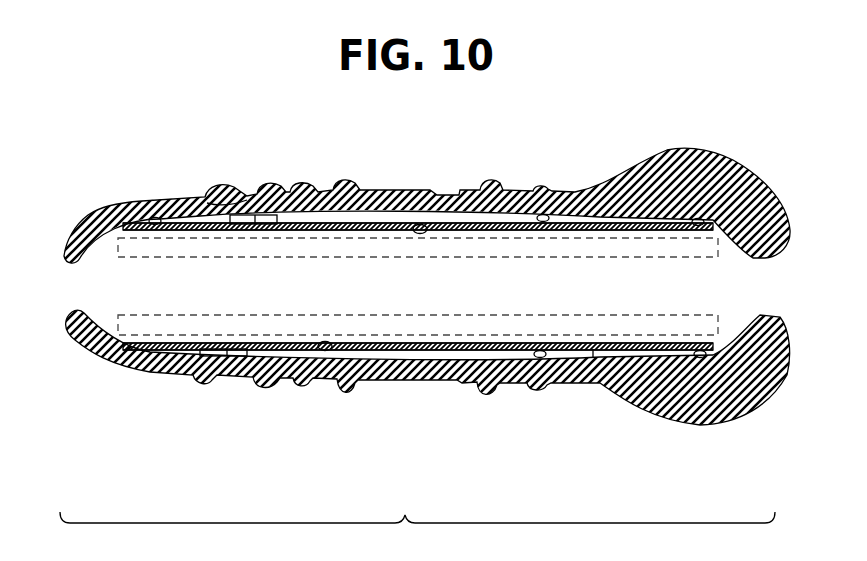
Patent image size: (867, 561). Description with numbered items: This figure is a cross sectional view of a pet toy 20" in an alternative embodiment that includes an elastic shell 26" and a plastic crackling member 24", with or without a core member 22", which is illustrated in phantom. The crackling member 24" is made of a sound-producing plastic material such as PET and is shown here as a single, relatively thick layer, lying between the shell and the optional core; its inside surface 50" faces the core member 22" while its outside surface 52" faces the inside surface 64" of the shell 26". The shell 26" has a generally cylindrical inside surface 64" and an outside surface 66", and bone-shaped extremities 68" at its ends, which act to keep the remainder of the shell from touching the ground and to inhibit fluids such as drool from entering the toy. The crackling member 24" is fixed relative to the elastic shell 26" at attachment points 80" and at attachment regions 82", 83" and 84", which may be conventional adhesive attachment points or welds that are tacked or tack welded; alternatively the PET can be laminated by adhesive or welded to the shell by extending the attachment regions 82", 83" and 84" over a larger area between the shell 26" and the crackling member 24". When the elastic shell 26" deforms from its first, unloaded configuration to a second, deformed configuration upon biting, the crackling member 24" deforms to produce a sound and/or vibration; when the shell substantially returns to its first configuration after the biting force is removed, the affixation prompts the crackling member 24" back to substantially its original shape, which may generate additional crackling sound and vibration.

The pet toy 20 is at (417, 536).
The core member 22 is at (648, 258).
The crackling member 24 is at (343, 232).
The elastic shell 26 is at (510, 180).
The inside surface 50 is at (426, 226).
The outside surface 52 is at (329, 223).
The inside surface 64 is at (210, 204).
The outside surface 66 is at (172, 200).
The bone-shaped extremity 68 is at (690, 148).
The attachment point 80 is at (150, 218).
The attachment region 82 is at (640, 360).
The attachment region 83 is at (227, 357).
The attachment region 84 is at (278, 215).